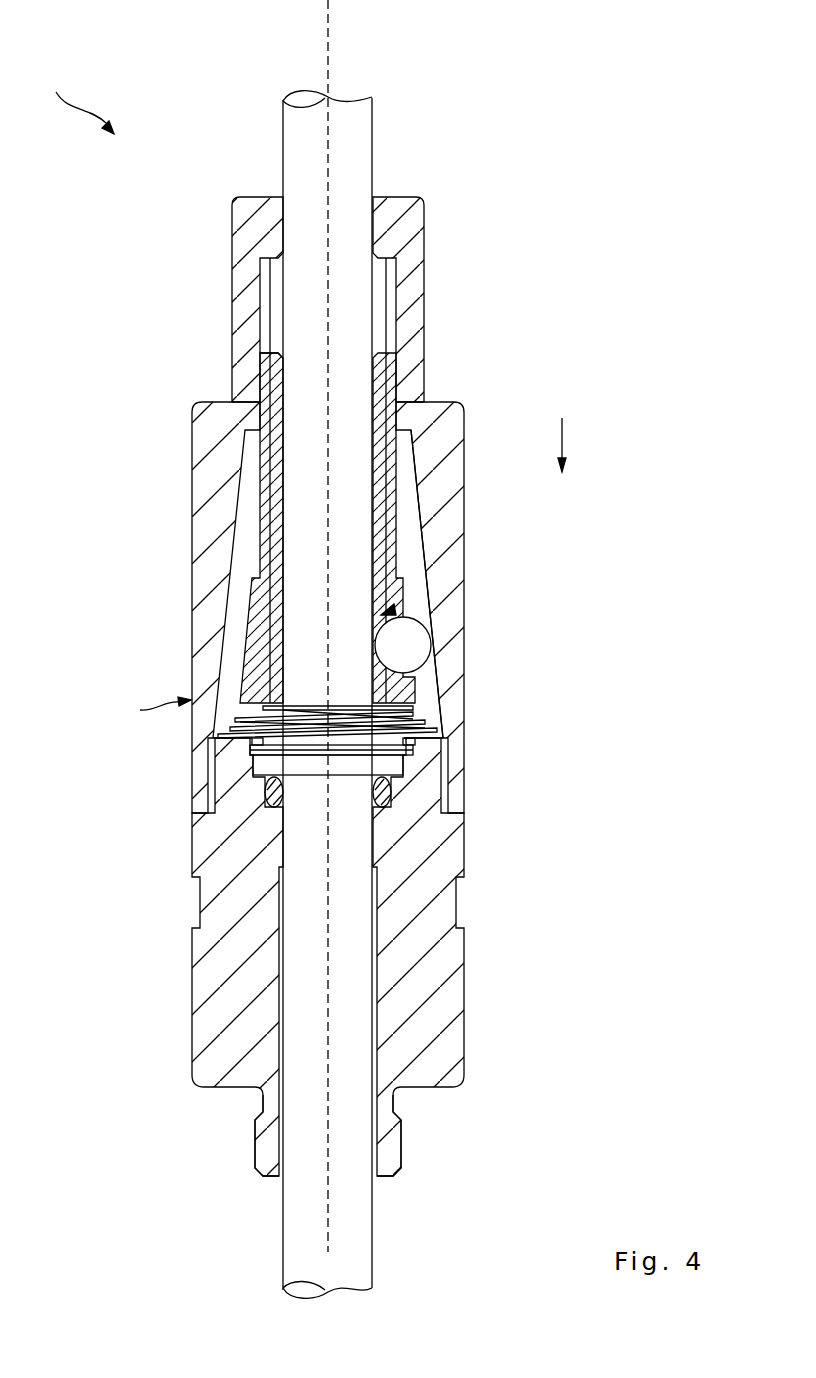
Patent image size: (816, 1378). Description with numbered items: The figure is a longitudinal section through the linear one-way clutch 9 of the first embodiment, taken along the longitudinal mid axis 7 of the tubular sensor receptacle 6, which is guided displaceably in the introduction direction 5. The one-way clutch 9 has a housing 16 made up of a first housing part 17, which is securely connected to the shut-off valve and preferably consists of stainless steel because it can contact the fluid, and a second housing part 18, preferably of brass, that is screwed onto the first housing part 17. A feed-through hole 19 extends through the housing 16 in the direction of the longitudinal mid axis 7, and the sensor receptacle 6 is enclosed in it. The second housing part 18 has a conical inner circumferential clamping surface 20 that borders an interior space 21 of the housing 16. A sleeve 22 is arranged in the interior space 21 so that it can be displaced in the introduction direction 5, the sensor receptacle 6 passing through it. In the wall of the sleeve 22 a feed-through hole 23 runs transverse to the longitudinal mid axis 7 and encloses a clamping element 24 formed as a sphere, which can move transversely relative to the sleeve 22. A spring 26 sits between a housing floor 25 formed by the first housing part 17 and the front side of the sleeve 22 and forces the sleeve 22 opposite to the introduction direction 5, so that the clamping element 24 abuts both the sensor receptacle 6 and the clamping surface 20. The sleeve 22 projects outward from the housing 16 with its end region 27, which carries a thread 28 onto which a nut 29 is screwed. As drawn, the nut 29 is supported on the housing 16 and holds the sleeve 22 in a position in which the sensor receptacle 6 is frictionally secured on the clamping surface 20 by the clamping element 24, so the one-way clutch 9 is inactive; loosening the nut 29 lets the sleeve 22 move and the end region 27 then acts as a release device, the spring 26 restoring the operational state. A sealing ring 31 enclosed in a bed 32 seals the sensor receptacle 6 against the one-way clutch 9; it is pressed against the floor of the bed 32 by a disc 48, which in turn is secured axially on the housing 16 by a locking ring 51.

The introduction direction 5 is at (562, 440).
The sensor receptacle 6 is at (283, 143).
The longitudinal mid axis 7 is at (328, 32).
The one-way clutch 9 is at (79, 100).
The housing 16 is at (149, 709).
The first housing part 17 is at (200, 993).
The second housing part 18 is at (200, 462).
The feed-through hole 19 is at (283, 1173).
The clamping surface 20 is at (245, 565).
The interior space 21 is at (250, 524).
The sleeve 22 is at (396, 537).
The feed-through hole 23 is at (405, 591).
The clamping element 24 is at (420, 652).
The housing floor 25 is at (250, 740).
The spring 26 is at (410, 722).
The end region 27 is at (382, 378).
The thread 28 is at (265, 373).
The nut 29 is at (418, 226).
The sealing ring 31 is at (388, 800).
The bed 32 is at (392, 798).
The disc 48 is at (405, 768).
The locking ring 51 is at (403, 752).